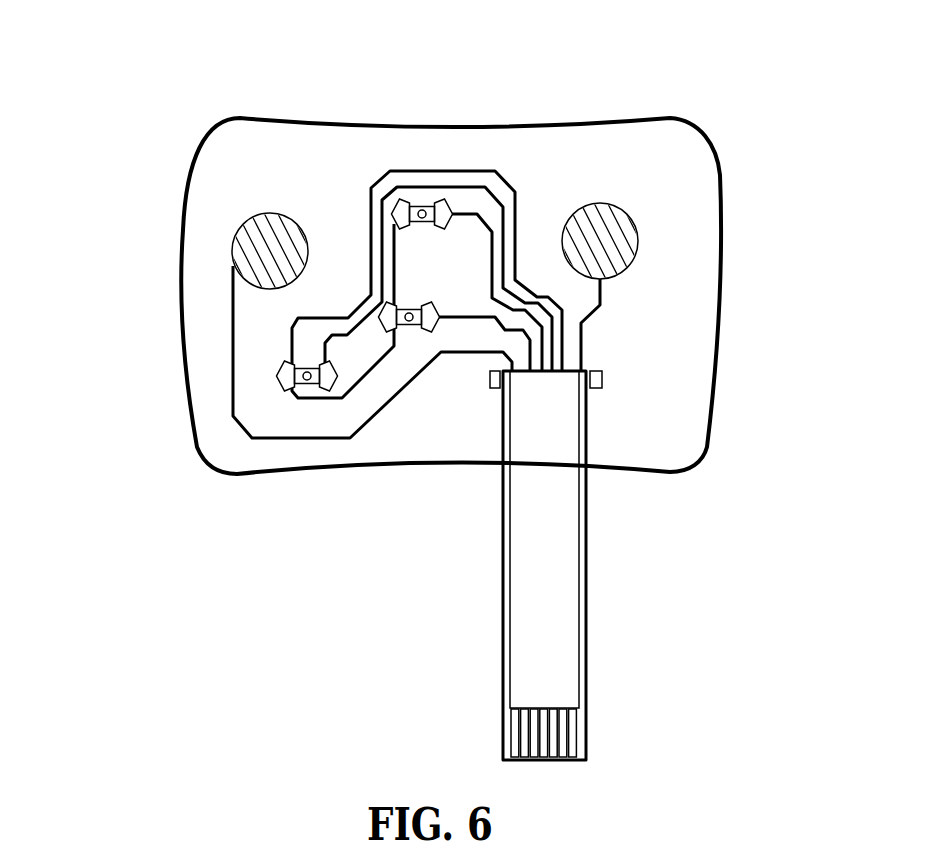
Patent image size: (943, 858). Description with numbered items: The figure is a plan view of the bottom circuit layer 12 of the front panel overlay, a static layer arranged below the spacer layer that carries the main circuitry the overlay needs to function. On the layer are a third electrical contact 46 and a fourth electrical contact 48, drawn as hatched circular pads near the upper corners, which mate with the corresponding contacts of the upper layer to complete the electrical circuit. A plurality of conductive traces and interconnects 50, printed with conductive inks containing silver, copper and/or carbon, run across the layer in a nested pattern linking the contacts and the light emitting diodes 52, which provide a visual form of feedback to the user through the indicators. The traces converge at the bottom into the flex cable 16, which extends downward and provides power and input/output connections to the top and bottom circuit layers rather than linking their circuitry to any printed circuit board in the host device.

The bottom circuit layer 12 is at (104, 62).
The flex cable 16 is at (586, 620).
The third electrical contact 46 is at (258, 245).
The fourth electrical contact 48 is at (612, 233).
The conductive traces and interconnects 50 is at (510, 182).
The light emitting diodes 52 is at (424, 209).